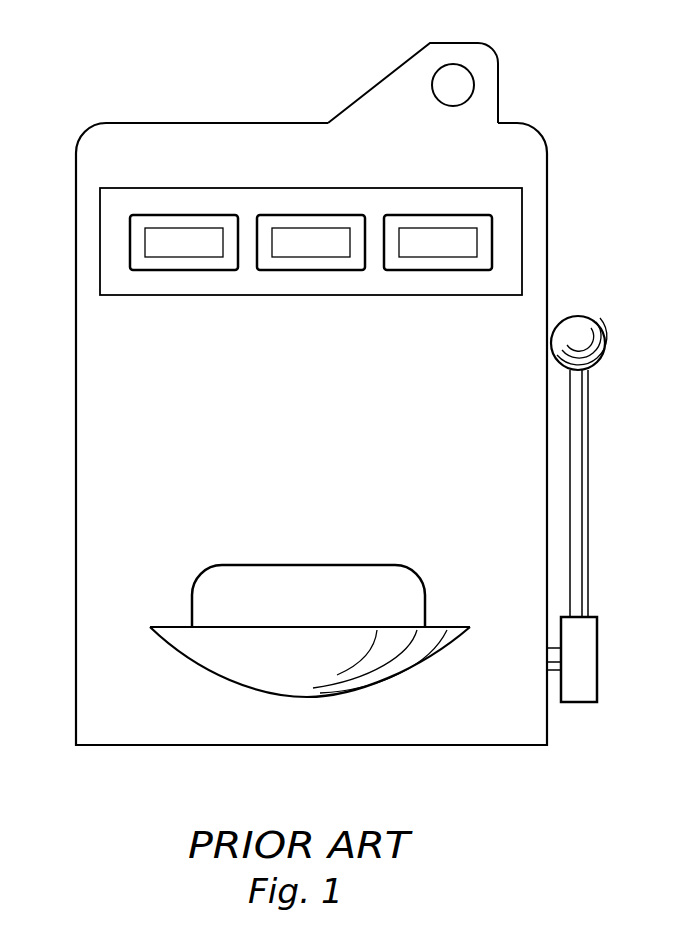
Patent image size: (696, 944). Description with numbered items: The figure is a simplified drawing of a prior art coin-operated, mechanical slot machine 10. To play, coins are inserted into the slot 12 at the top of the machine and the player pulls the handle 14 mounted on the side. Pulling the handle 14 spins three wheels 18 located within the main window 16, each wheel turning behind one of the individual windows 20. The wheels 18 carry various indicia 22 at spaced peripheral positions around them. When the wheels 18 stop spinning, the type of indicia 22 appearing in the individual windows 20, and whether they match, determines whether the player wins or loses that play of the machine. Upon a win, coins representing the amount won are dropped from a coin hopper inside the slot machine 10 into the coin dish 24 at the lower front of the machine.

The slot machine 10 is at (522, 167).
The slot 12 is at (474, 80).
The handle 14 is at (588, 508).
The main window 16 is at (375, 295).
The wheels 18 is at (228, 258).
The individual windows 20 is at (145, 270).
The indicia 22 is at (218, 248).
The coin dish 24 is at (433, 625).